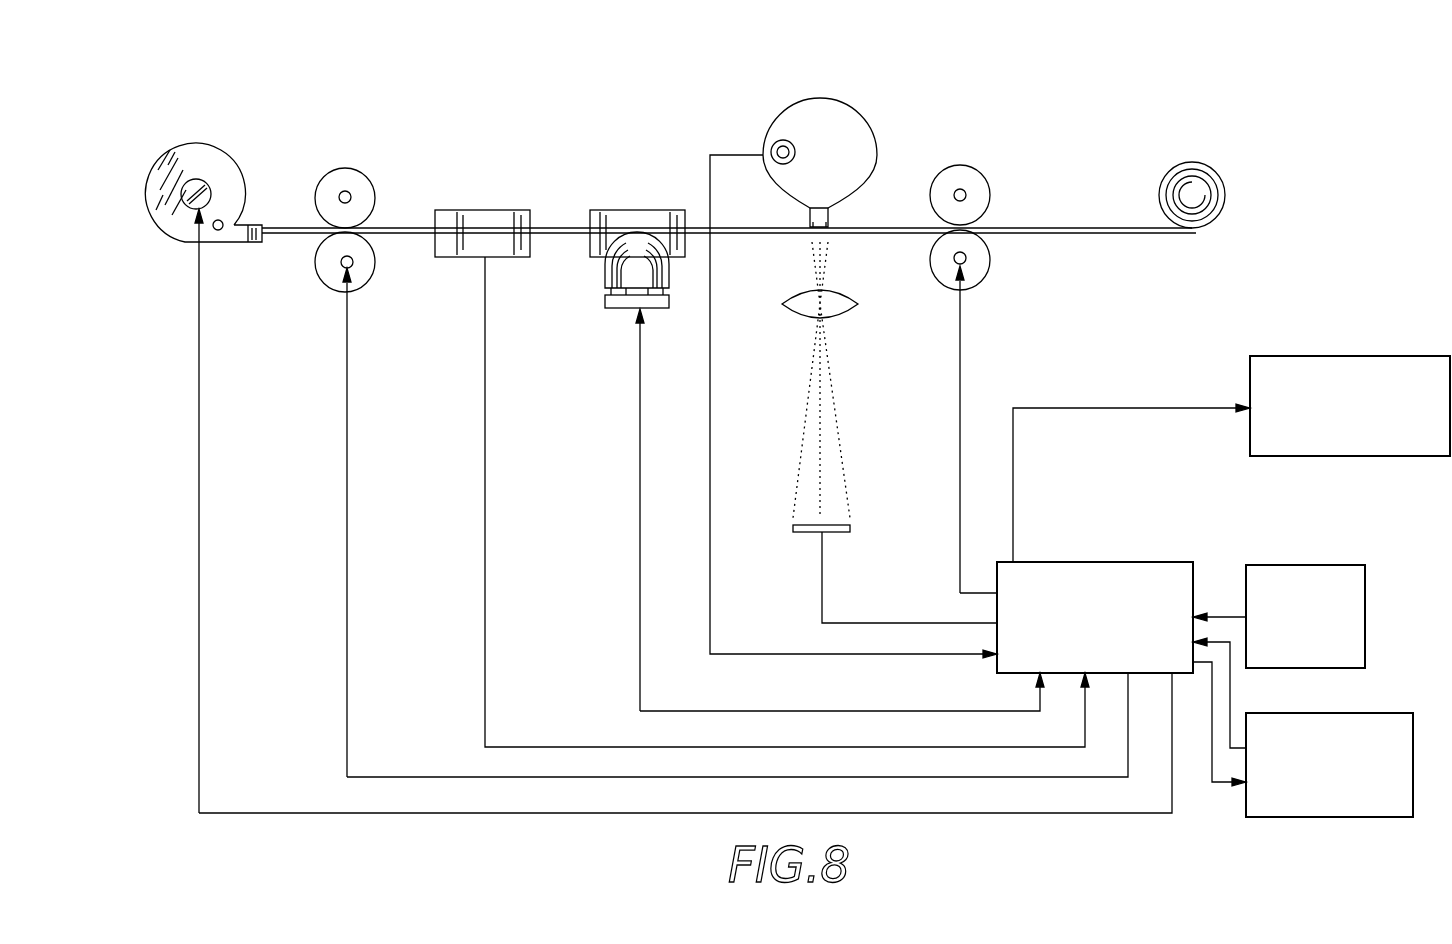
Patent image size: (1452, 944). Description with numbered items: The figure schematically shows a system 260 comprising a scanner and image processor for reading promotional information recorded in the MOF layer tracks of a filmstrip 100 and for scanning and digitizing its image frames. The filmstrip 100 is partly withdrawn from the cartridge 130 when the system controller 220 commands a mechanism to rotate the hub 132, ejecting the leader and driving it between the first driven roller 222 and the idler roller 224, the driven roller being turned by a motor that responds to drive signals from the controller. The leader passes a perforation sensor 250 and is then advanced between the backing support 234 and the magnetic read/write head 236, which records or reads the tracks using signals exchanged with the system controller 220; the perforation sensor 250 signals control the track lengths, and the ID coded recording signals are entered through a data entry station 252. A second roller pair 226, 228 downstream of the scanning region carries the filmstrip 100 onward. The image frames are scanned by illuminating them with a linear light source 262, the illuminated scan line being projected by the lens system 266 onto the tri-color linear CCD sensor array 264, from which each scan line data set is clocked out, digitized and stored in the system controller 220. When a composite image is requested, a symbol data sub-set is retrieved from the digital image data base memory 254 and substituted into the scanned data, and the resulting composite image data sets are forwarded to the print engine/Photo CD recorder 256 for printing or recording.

The filmstrip 100 is at (1123, 233).
The cartridge 130 is at (223, 148).
The hub 132 is at (199, 178).
The system controller 220 is at (1143, 562).
The first driven roller 222 is at (323, 284).
The idler roller 224 is at (352, 192).
The drive roller 226 is at (990, 261).
The idler roller 228 is at (990, 196).
The backing support 234 is at (640, 210).
The magnetic read/write head 236 is at (605, 288).
The perforation sensor 250 is at (485, 210).
The data entry station 252 is at (1312, 565).
The digital image data base memory 254 is at (1395, 713).
The print engine/Photo CD recorder 256 is at (1353, 356).
The system 260 is at (708, 85).
The linear light source 262 is at (876, 155).
The tri-color linear CCD sensor array 264 is at (848, 532).
The lens system 266 is at (856, 305).